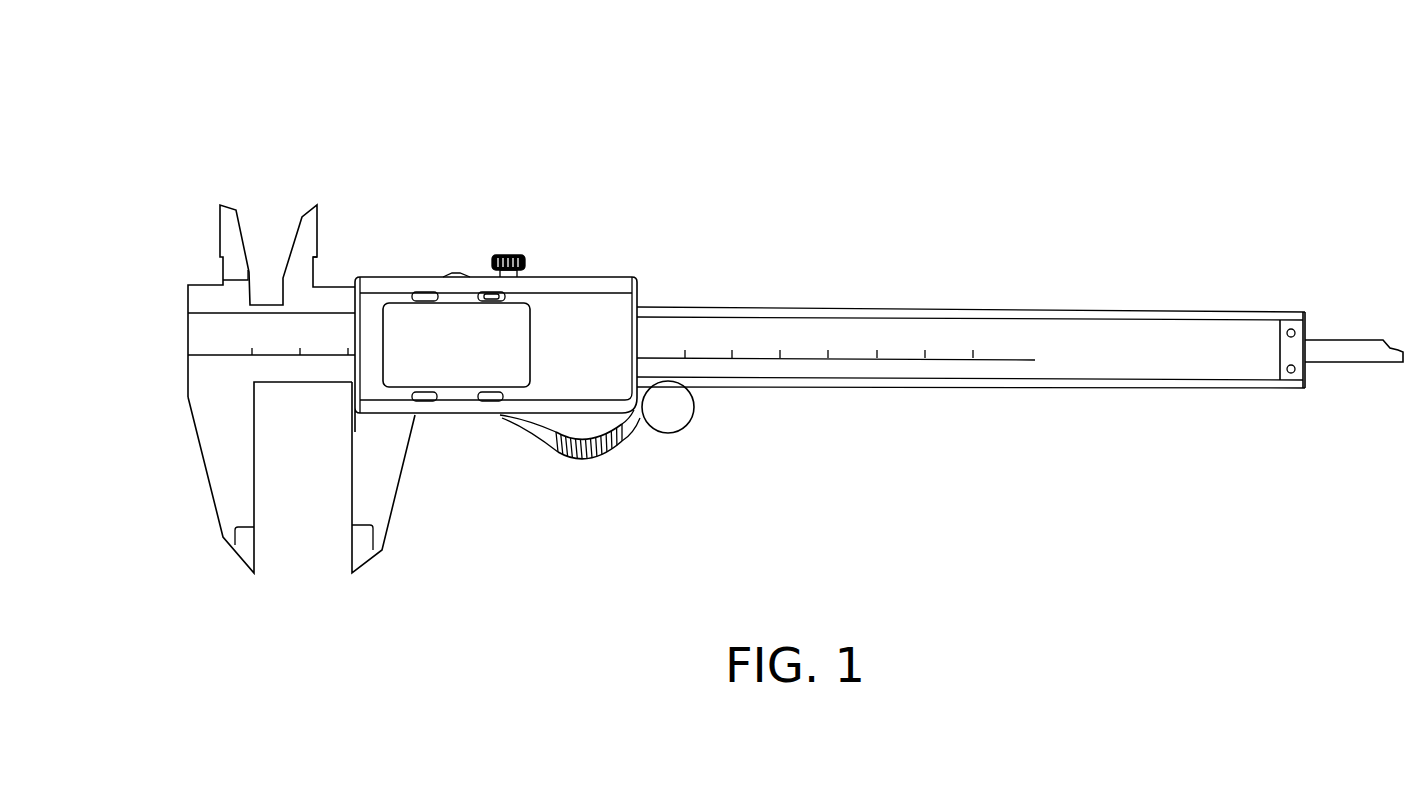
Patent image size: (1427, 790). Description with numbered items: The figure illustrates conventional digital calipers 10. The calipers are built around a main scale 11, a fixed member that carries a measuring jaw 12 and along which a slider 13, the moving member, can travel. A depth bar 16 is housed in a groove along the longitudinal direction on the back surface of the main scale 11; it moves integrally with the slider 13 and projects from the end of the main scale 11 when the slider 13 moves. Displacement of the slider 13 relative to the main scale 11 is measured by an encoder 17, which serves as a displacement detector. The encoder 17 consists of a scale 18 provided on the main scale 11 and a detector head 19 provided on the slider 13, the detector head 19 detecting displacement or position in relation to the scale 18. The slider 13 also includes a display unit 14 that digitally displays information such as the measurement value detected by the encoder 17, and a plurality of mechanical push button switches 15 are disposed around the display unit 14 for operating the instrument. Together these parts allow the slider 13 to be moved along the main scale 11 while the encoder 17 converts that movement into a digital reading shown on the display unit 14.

The digital calipers 10 is at (1094, 140).
The main scale 11 is at (1157, 332).
The measuring jaw 12 is at (227, 232).
The slider 13 is at (597, 283).
The display unit 14 is at (517, 340).
The mechanical push button switches 15 is at (495, 292).
The depth bar 16 is at (1360, 350).
The encoder 17 is at (662, 508).
The scale 18 is at (787, 368).
The detector head 19 is at (588, 392).